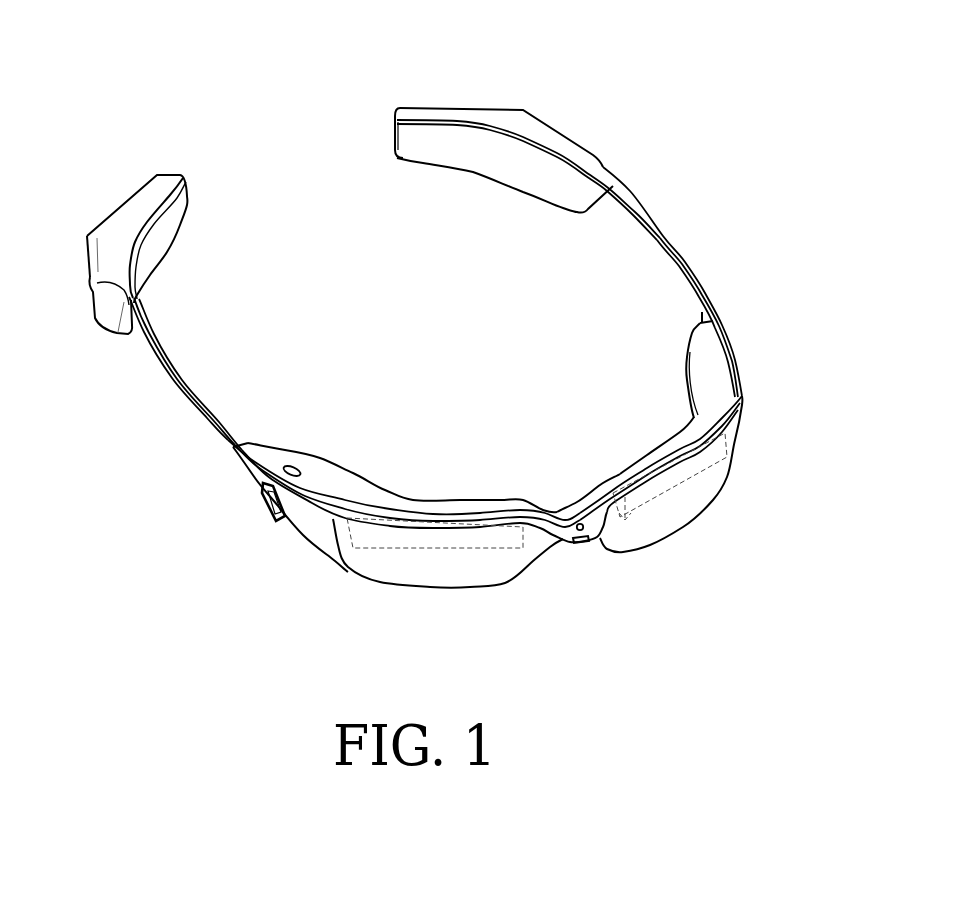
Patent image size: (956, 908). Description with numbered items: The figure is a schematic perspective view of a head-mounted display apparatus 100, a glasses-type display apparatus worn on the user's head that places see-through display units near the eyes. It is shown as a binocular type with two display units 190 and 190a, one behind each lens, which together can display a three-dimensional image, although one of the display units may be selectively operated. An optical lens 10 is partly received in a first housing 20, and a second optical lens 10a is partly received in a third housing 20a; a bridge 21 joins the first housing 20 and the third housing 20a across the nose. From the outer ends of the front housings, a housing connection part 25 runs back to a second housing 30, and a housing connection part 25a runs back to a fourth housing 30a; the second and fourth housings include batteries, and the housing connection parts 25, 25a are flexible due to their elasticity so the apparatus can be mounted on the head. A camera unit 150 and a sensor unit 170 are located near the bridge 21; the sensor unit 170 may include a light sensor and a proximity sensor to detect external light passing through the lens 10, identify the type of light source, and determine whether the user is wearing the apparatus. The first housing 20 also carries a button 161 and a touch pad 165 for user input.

The head-mounted display apparatus 100 is at (124, 64).
The optical lens 10 is at (461, 575).
The optical lens 10a is at (663, 517).
The first housing 20 is at (271, 452).
The third housing 20a is at (716, 358).
The bridge 21 is at (561, 511).
The housing connection part 25 is at (176, 375).
The housing connection part 25a is at (672, 240).
The second housing 30 is at (128, 208).
The fourth housing 30a is at (547, 135).
The camera unit 150 is at (579, 522).
The button 161 is at (297, 465).
The touch pad 165 is at (268, 497).
The sensor unit 170 is at (579, 543).
The display unit 190 is at (393, 551).
The display unit 190a is at (708, 462).